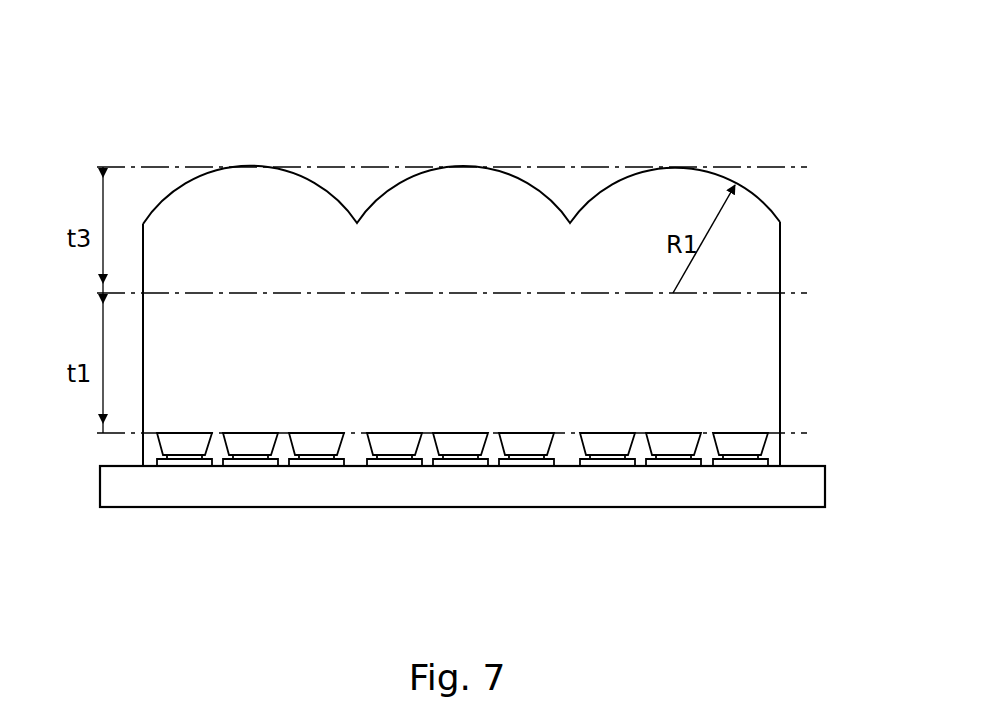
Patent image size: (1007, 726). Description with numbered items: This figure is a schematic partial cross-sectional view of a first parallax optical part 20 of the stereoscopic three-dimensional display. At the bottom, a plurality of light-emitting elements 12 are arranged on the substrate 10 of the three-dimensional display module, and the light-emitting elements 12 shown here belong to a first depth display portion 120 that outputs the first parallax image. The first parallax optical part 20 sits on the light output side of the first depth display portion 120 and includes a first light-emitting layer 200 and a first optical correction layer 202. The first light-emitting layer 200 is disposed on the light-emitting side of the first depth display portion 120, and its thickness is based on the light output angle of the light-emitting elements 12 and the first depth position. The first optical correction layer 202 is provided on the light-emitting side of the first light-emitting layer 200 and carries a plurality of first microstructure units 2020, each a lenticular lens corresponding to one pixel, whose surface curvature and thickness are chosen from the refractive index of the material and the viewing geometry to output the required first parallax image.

The substrate 10 is at (203, 497).
The light-emitting element 12 is at (167, 444).
The first parallax optical part 20 is at (546, 245).
The first depth display portion 120 is at (807, 443).
The first light-emitting layer 200 is at (763, 325).
The first optical correction layer 202 is at (514, 158).
The first microstructure unit 2020 is at (255, 180).